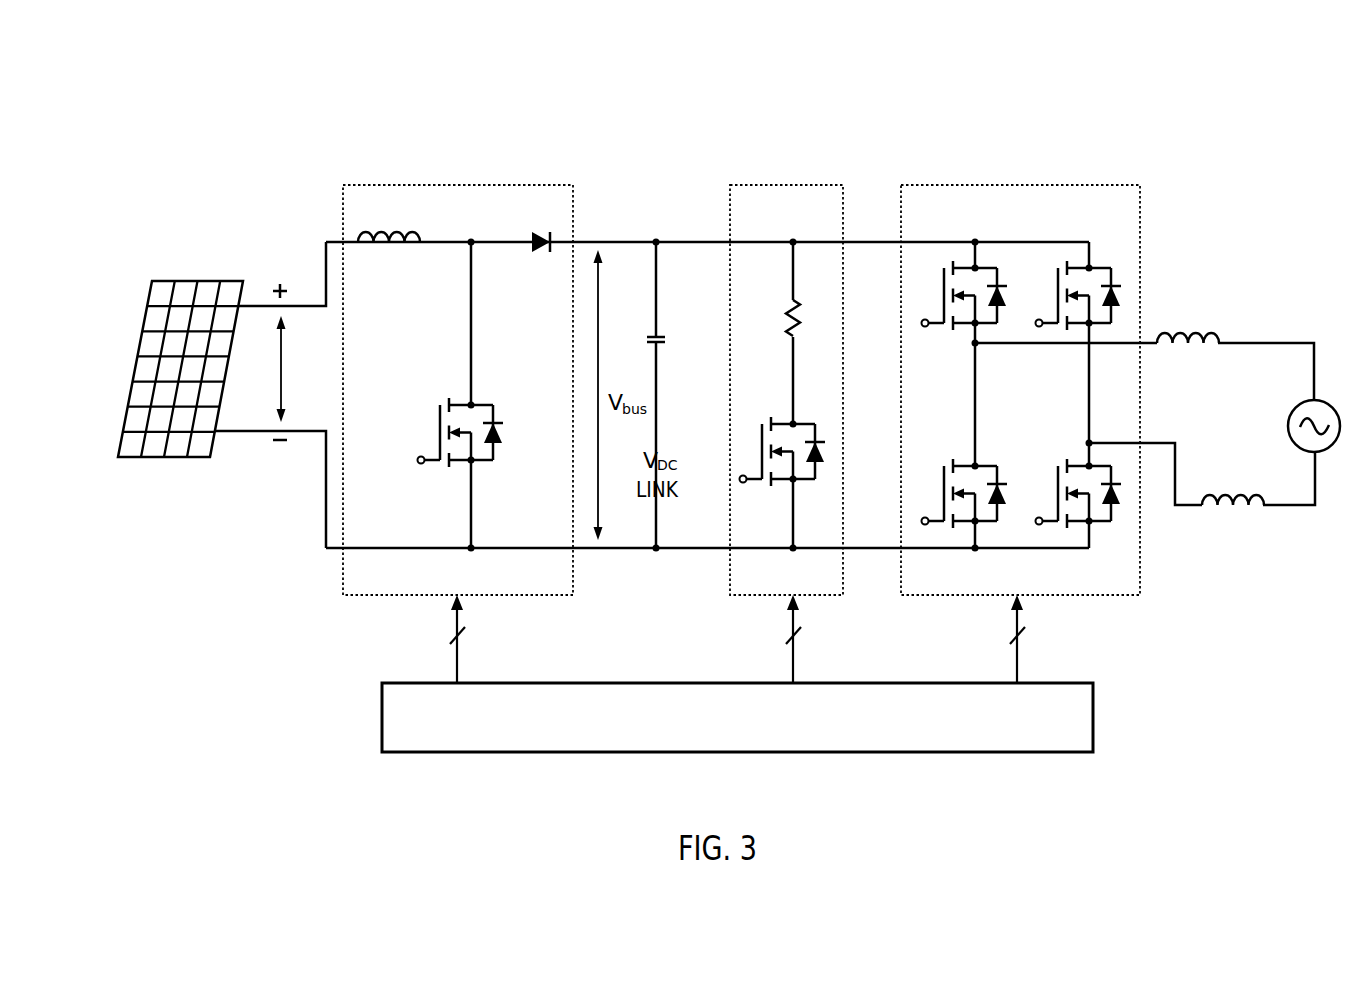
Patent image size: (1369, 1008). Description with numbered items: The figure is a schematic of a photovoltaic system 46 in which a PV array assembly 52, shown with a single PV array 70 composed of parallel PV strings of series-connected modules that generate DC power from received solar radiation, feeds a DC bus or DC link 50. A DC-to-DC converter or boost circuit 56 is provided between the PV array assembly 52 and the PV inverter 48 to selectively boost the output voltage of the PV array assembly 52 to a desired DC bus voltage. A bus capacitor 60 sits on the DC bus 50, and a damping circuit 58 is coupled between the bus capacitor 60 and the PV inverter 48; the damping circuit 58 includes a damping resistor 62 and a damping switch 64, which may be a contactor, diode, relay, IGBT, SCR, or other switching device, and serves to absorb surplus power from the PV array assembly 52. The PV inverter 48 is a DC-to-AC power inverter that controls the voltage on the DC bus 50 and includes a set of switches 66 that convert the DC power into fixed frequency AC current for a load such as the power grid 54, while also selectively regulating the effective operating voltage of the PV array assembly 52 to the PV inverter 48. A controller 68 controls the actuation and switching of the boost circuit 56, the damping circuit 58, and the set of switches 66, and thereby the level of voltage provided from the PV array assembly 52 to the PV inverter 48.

The photovoltaic system 46 is at (97, 156).
The PV inverter 48 is at (1020, 374).
The DC bus 50 is at (678, 242).
The PV array assembly 52 is at (204, 389).
The power grid 54 is at (1328, 402).
The boost circuit 56 is at (513, 185).
The damping circuit 58 is at (788, 374).
The bus capacitor 60 is at (662, 336).
The damping resistor 62 is at (796, 300).
The damping switch 64 is at (804, 424).
The set of switches 66 is at (1068, 268).
The controller 68 is at (1093, 713).
The PV array 70 is at (190, 281).